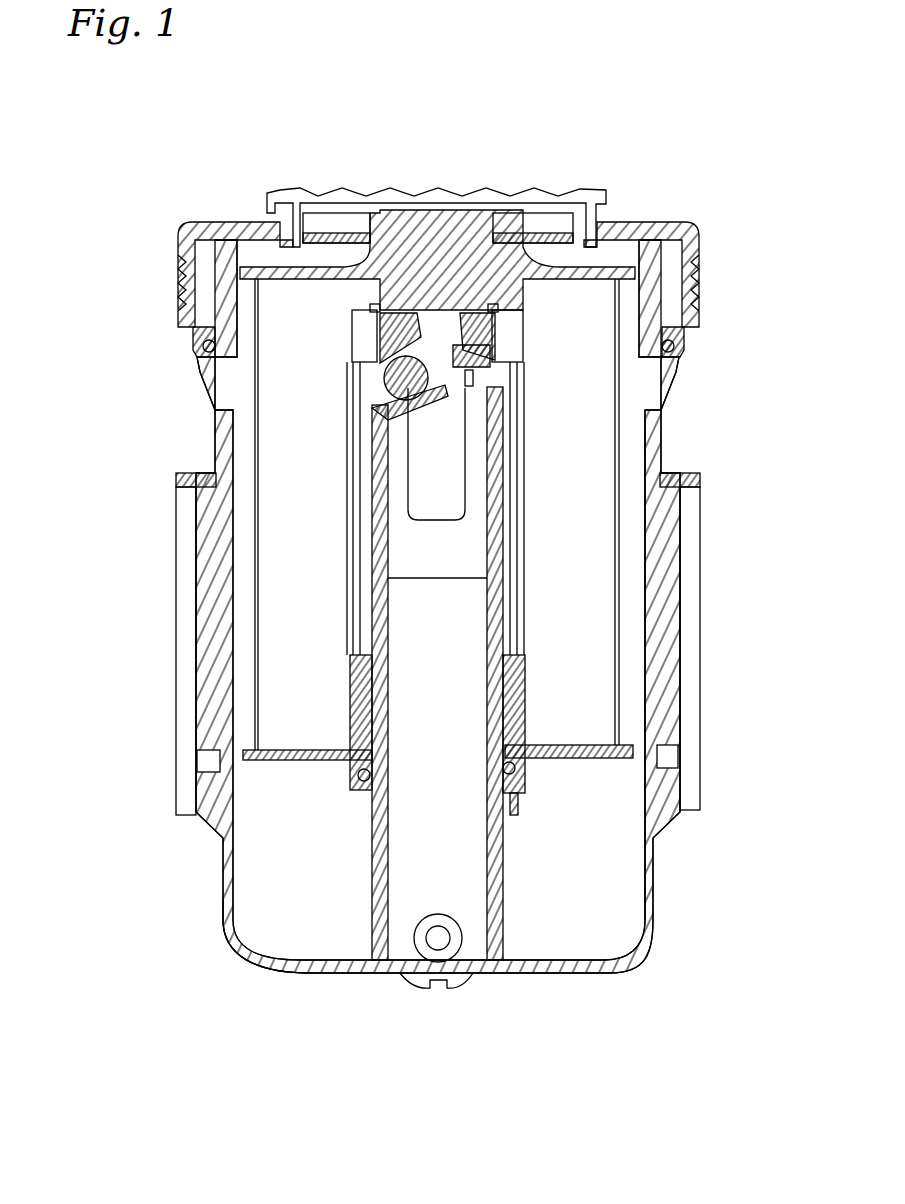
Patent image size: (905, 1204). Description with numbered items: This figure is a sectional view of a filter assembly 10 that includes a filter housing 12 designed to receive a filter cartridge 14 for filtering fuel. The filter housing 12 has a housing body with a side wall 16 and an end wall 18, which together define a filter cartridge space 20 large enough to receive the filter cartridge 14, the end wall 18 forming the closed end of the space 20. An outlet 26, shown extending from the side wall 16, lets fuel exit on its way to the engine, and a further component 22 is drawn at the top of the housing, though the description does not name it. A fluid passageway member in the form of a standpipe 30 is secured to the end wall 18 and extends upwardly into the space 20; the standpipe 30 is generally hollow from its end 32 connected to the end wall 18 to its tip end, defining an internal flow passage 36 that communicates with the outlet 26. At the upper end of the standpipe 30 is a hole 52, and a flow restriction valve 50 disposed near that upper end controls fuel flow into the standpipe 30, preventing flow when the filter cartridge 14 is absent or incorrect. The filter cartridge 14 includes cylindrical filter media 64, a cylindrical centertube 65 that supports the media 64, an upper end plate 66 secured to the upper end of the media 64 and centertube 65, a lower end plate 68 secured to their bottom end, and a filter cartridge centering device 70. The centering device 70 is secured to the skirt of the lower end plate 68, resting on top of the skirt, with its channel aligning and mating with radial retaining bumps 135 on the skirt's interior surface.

The assembly 10 is at (657, 130).
The filter housing 12 is at (707, 511).
The filter cartridge 14 is at (290, 472).
The side wall 16 is at (656, 455).
The end wall 18 is at (292, 972).
The filter cartridge space 20 is at (542, 938).
The cap 22 is at (547, 203).
The outlet 26 is at (433, 940).
The standpipe 30 is at (505, 880).
The end 32 is at (490, 975).
The internal flow passage 36 is at (460, 830).
The flow restriction valve 50 is at (505, 388).
The hole 52 is at (382, 338).
The filter media 64 is at (277, 682).
The centertube 65 is at (356, 536).
The upper end plate 66 is at (612, 265).
The lower end plate 68 is at (272, 760).
The filter cartridge centering device 70 is at (535, 640).
The radial retaining bumps 135 is at (487, 700).